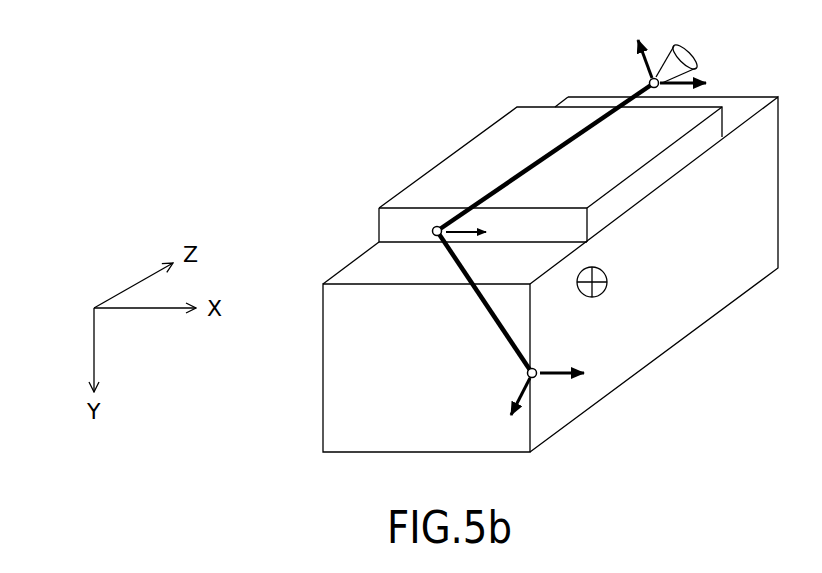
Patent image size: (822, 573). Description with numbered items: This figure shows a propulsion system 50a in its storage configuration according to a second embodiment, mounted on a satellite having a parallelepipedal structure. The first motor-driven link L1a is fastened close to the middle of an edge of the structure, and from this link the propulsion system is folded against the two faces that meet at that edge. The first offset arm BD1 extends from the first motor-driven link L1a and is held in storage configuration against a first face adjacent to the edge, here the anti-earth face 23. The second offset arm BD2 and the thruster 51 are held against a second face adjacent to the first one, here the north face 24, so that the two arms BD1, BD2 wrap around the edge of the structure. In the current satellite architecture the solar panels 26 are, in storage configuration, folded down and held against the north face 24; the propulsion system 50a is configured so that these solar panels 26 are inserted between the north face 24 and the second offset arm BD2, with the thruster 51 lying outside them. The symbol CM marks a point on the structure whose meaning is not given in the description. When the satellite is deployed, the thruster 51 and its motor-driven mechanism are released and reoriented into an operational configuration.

The anti-earth face 23 is at (468, 438).
The north face 24 is at (372, 270).
The solar panels 26 is at (660, 167).
The first offset arm BD1 is at (503, 335).
The second offset arm BD2 is at (540, 160).
The first motor-driven link L1a is at (538, 378).
The propulsion system 50a is at (616, 63).
The thruster 51 is at (688, 52).
The center of mass CM is at (603, 288).